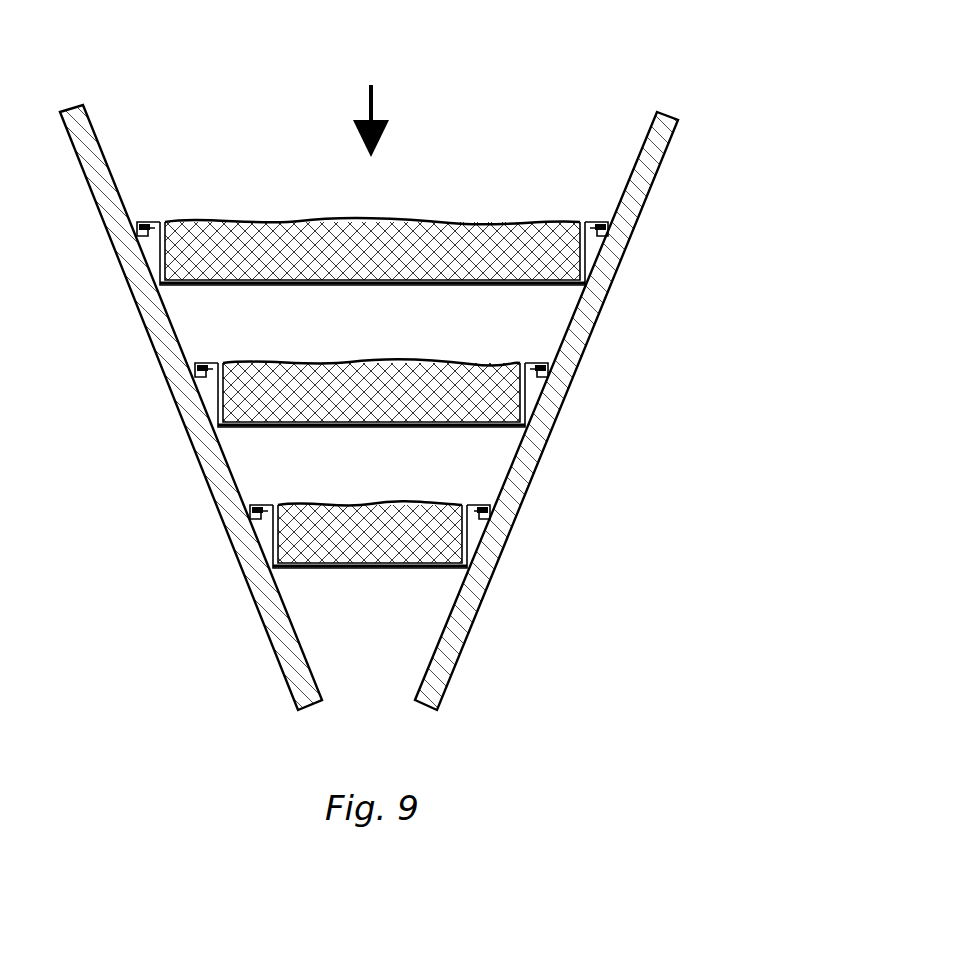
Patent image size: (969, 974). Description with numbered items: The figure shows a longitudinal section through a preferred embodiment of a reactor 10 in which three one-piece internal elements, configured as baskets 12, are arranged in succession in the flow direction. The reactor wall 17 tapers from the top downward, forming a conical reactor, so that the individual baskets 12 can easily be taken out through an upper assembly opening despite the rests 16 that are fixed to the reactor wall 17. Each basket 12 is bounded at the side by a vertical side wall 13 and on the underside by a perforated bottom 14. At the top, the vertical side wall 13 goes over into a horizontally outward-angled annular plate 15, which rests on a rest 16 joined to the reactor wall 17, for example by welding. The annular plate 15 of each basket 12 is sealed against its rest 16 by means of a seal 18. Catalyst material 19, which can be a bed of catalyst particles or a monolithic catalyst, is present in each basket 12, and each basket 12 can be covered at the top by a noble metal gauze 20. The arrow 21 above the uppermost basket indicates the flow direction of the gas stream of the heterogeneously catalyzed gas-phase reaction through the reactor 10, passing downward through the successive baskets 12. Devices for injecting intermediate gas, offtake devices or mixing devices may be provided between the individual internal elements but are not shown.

The reactor 10 is at (666, 51).
The basket 12 is at (192, 288).
The vertical side wall 13 is at (600, 265).
The perforated bottom 14 is at (323, 286).
The annular plate 15 is at (146, 226).
The rest 16 is at (140, 240).
The reactor wall 17 is at (640, 190).
The seal 18 is at (608, 235).
The catalyst material 19 is at (250, 248).
The noble metal gauze 20 is at (465, 220).
The arrow 21 is at (374, 105).